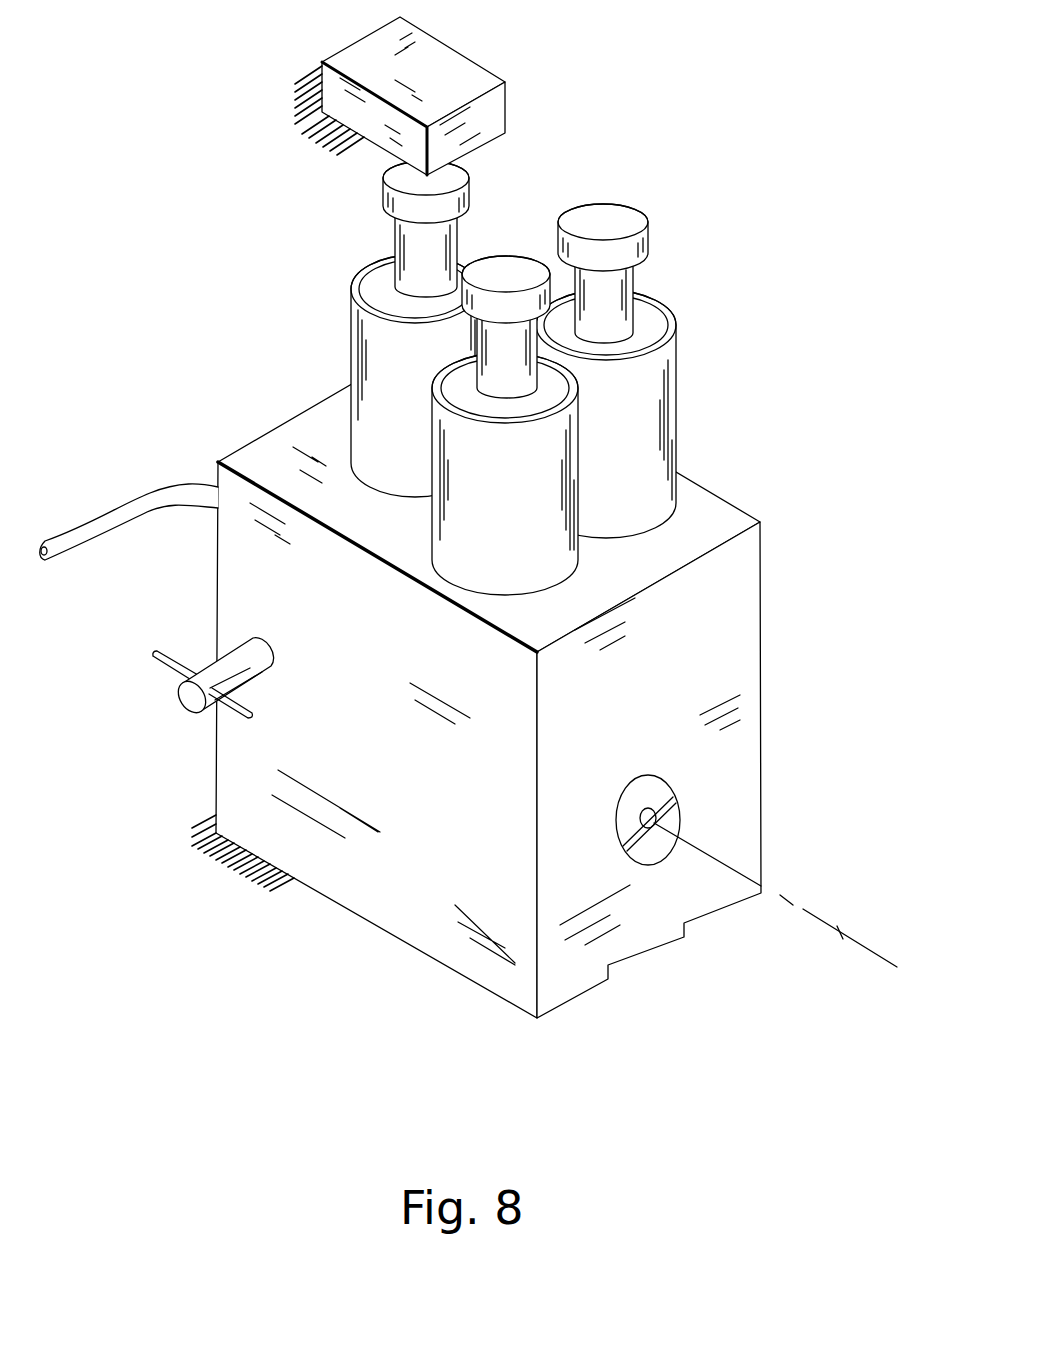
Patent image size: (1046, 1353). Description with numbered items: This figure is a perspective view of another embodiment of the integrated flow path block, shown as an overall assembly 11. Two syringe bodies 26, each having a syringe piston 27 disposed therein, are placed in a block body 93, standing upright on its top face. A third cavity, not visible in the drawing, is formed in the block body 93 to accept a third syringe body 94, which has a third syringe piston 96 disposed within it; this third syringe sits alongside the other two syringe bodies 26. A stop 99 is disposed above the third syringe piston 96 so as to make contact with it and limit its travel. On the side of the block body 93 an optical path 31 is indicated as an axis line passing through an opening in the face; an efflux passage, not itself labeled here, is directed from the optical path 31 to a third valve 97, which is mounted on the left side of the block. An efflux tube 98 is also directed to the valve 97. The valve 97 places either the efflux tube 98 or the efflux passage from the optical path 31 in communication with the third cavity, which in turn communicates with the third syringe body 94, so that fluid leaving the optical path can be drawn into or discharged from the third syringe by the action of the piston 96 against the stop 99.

The apparatus 11 is at (812, 532).
The syringe bodies 26 is at (677, 366).
The syringe pistons 27 is at (563, 213).
The optical path 31 is at (840, 932).
The block body 93 is at (761, 522).
The third syringe body 94 is at (349, 330).
The third syringe piston 96 is at (468, 166).
The third valve 97 is at (179, 698).
The efflux tube 98 is at (150, 492).
The stop 99 is at (458, 50).